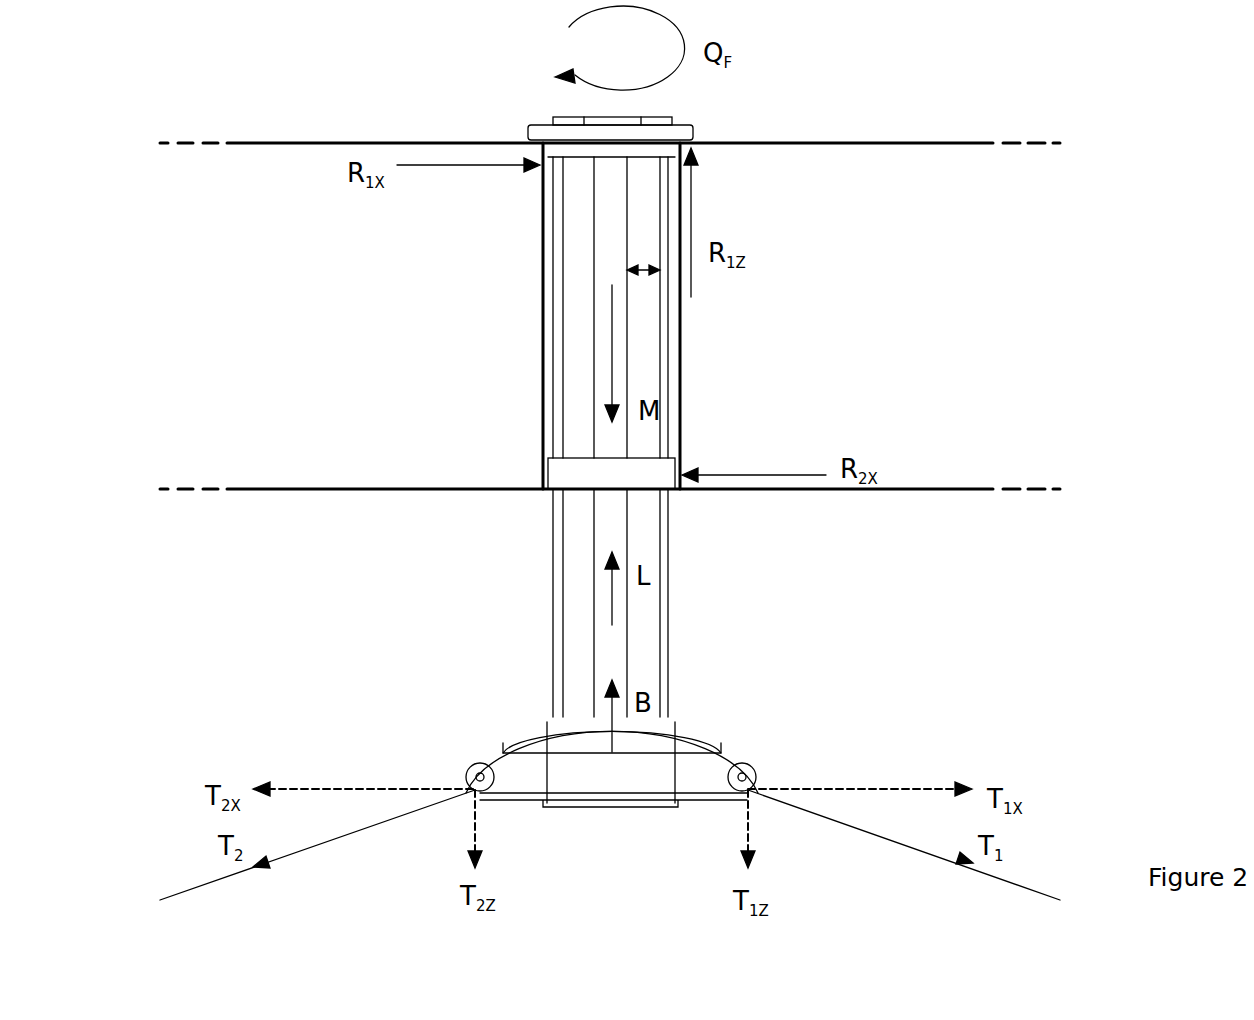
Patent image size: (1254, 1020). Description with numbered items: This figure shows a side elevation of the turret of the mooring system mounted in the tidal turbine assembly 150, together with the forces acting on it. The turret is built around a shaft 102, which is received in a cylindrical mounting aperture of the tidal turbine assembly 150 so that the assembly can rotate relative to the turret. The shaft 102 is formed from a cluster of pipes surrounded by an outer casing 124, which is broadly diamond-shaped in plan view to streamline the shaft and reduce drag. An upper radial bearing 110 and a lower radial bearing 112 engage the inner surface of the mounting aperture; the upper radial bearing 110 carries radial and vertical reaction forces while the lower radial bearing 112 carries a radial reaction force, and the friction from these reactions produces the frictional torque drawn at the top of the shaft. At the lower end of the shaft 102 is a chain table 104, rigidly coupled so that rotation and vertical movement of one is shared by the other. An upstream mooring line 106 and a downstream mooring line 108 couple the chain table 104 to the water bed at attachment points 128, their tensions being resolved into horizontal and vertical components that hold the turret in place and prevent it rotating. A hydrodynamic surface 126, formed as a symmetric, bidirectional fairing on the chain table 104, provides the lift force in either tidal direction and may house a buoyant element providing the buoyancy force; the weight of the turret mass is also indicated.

The shaft 102 is at (613, 524).
The chain table 104 is at (590, 725).
The upstream mooring line 106 is at (1038, 888).
The downstream mooring line 108 is at (210, 882).
The upper radial bearing 110 is at (687, 132).
The lower radial bearing 112 is at (655, 466).
The outer casing 124 is at (653, 649).
The hydrodynamic surface 126 is at (555, 737).
The attachment points 128 is at (470, 775).
The tidal turbine assembly 150 is at (298, 182).